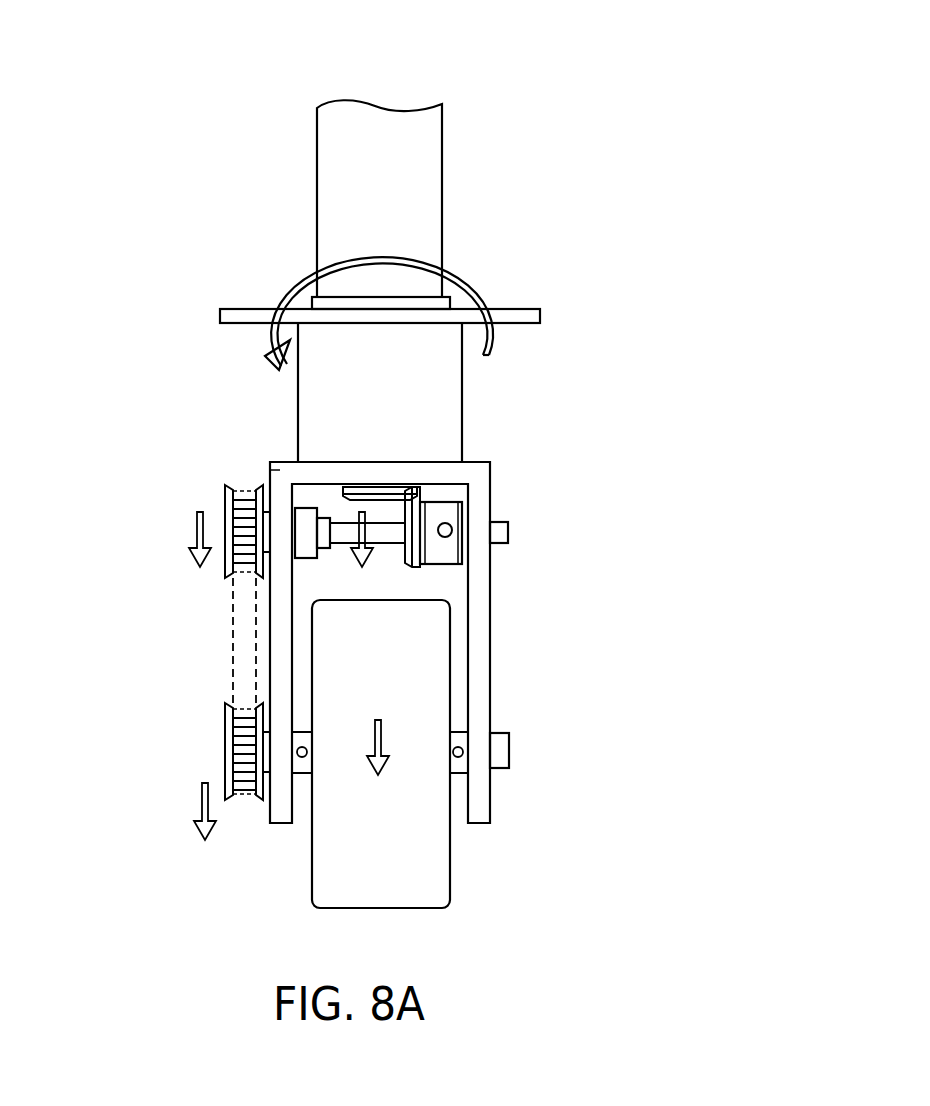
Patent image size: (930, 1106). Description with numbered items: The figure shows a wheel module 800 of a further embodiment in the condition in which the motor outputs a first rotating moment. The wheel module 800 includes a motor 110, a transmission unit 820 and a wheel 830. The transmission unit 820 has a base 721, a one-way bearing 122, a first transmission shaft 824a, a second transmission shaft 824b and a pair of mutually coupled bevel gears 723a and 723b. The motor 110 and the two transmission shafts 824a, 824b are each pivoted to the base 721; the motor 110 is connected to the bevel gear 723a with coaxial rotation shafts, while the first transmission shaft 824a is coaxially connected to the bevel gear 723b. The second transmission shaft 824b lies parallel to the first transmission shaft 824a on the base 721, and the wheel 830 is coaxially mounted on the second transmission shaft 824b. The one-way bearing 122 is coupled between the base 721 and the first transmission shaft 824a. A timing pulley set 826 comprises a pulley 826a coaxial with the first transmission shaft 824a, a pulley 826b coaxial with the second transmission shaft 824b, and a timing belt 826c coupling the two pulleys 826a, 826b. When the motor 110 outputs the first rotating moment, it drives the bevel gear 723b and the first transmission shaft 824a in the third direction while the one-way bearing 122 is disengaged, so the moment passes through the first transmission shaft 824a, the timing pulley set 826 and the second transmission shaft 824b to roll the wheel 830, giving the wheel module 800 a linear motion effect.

The wheel module 800 is at (484, 81).
The motor 110 is at (432, 190).
The transmission unit 820 is at (131, 480).
The base 721 is at (272, 468).
The one-way bearing 122 is at (307, 518).
The bevel gear 723a is at (388, 492).
The bevel gear 723b is at (416, 510).
The first transmission shaft 824a is at (500, 534).
The second transmission shaft 824b is at (503, 752).
The timing pulley set 826 is at (100, 590).
The pulley 826a is at (225, 578).
The pulley 826b is at (225, 713).
The timing belt 826c is at (233, 640).
The wheel 830 is at (445, 867).